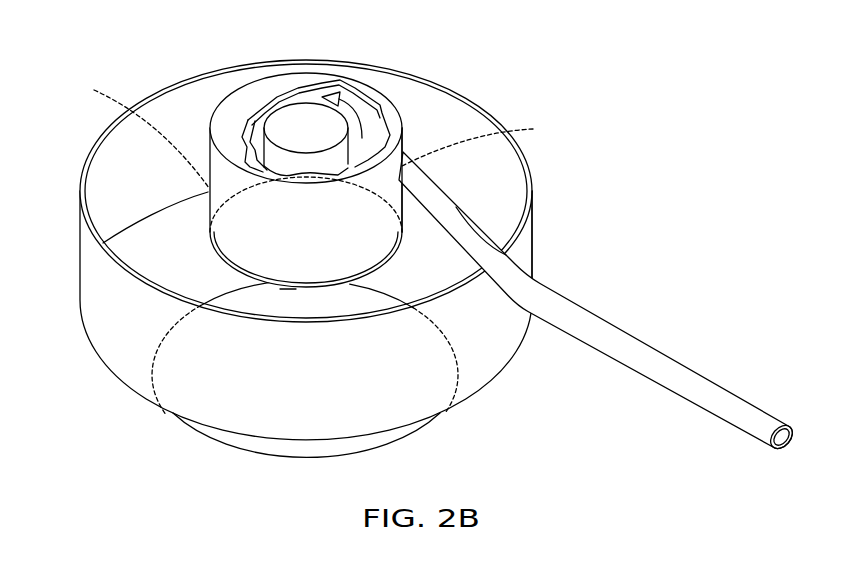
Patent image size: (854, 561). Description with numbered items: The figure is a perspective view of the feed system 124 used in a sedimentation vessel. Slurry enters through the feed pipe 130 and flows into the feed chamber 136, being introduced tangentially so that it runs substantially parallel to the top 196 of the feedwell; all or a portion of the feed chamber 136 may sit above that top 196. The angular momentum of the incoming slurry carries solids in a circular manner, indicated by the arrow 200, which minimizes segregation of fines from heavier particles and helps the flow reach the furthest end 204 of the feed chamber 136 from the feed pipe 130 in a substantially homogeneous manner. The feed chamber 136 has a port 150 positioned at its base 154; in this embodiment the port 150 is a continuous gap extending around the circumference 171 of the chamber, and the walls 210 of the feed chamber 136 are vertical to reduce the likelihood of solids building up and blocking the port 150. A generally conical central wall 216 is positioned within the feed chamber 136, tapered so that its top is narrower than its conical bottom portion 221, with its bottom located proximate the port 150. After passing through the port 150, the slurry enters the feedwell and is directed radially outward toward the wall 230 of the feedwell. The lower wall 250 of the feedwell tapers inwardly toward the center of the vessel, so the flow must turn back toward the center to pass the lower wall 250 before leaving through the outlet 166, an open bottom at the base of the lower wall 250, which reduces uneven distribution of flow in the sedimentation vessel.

The feed system 124 is at (512, 102).
The feed pipe 130 is at (622, 345).
The feed chamber 136 is at (257, 148).
The port 150 is at (383, 272).
The base 154 is at (287, 290).
The outlet 166 is at (460, 363).
The circumference 171 is at (208, 240).
The top 196 is at (458, 92).
The arrow 200 is at (362, 138).
The furthest end 204 is at (382, 158).
The walls 210 is at (132, 132).
The central wall 216 is at (488, 140).
The bottom portion 221 is at (326, 241).
The wall 230 is at (531, 240).
The lower wall 250 is at (362, 442).